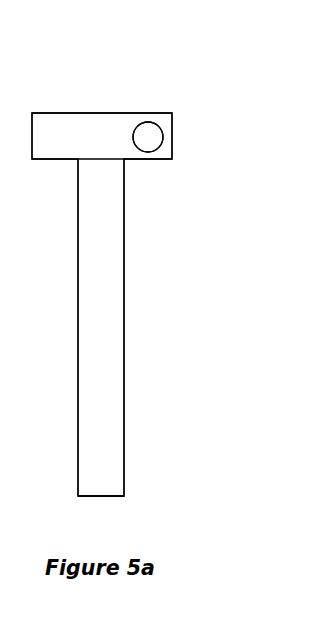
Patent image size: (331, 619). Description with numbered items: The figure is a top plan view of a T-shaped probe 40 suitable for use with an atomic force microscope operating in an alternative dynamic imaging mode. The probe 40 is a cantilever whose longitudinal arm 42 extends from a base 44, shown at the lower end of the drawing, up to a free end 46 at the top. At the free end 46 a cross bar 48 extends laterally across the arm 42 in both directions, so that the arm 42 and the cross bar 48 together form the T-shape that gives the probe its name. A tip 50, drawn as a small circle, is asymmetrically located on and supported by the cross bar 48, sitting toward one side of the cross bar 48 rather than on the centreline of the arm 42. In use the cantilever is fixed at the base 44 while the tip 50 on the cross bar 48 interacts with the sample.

The T-shaped probe 40 is at (166, 77).
The longitudinal arm 42 is at (112, 288).
The base 44 is at (103, 493).
The free end 46 is at (100, 111).
The cross bar 48 is at (174, 130).
The tip 50 is at (147, 140).